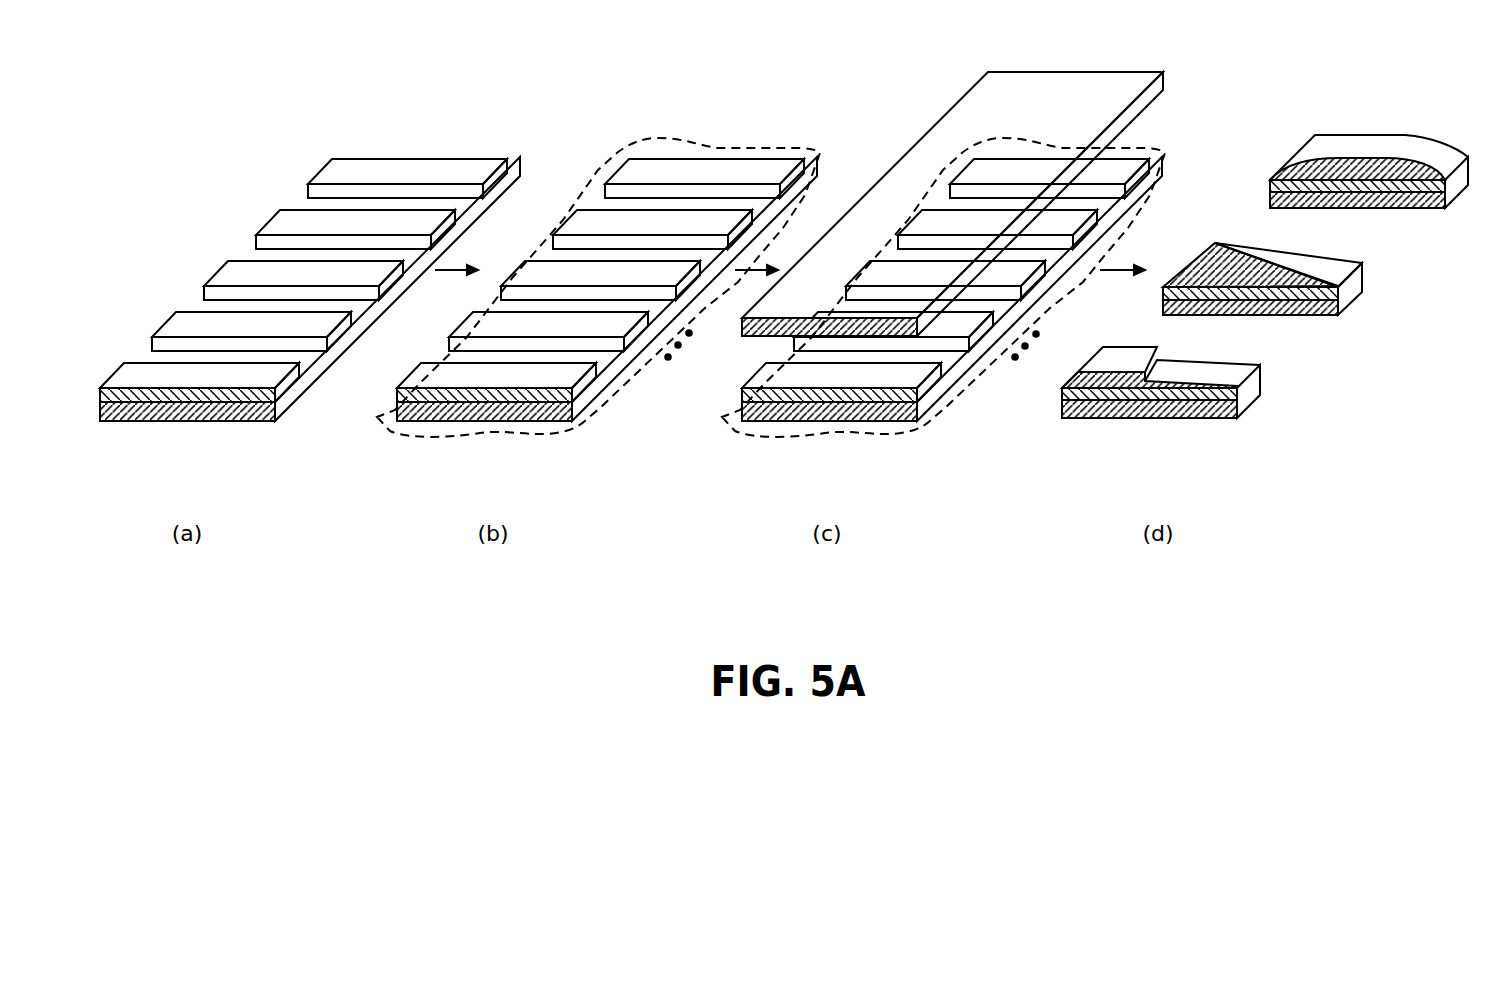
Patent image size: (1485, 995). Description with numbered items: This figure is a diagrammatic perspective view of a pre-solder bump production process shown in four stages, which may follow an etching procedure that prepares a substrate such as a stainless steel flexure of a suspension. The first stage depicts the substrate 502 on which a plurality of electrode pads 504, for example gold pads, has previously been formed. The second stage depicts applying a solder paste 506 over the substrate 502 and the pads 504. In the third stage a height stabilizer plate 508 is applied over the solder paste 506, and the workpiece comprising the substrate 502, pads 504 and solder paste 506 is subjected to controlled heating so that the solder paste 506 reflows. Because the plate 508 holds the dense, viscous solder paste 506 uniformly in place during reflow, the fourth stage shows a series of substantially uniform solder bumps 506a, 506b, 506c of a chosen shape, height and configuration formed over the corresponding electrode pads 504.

The substrate 502 is at (256, 421).
The electrode pads 504 is at (122, 370).
The solder paste 506 is at (714, 148).
The height stabilizer plate 508 is at (1048, 71).
The solder bump 506a is at (1360, 143).
The solder bump 506b is at (1253, 256).
The solder bump 506c is at (1190, 372).